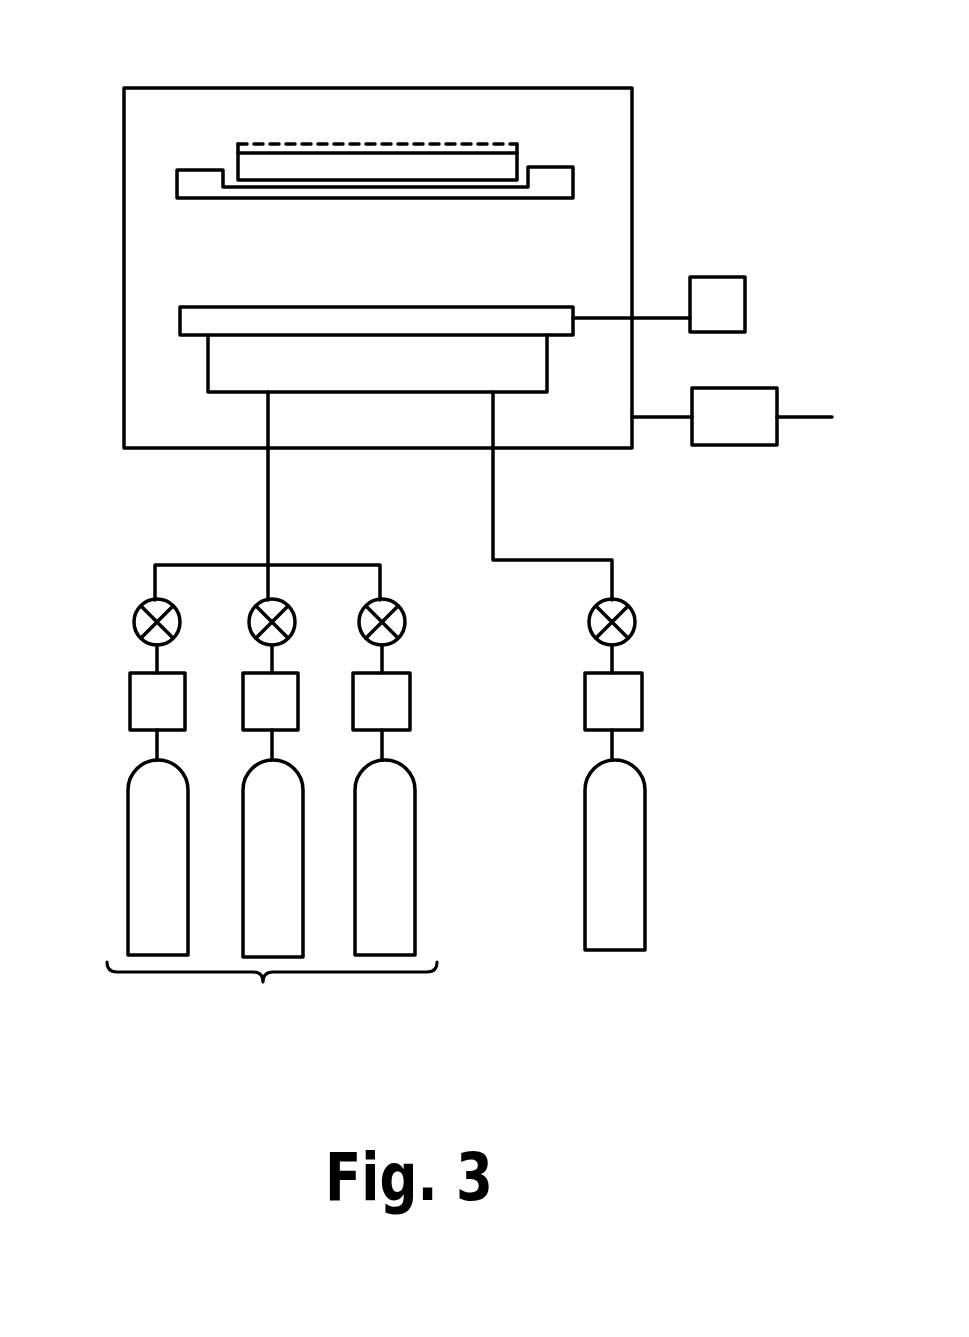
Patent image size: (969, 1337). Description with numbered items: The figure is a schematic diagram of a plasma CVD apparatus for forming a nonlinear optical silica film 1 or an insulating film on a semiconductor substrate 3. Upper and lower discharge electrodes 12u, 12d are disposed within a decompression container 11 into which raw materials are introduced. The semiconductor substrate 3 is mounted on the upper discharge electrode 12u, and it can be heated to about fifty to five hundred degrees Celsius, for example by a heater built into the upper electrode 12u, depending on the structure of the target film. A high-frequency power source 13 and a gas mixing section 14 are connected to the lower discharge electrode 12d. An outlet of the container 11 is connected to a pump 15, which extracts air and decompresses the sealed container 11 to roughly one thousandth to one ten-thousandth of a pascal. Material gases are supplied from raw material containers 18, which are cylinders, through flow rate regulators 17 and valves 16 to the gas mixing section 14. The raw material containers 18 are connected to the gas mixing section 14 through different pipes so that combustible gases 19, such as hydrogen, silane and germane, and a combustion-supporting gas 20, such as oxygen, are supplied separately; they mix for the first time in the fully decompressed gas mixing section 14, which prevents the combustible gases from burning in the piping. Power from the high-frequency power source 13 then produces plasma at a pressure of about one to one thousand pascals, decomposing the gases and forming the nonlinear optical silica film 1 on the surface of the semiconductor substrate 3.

The nonlinear optical silica film 1 is at (286, 144).
The semiconductor substrate 3 is at (517, 168).
The decompression container 11 is at (632, 108).
The upper discharge electrode 12u is at (177, 186).
The lower discharge electrode 12d is at (180, 320).
The high-frequency power source 13 is at (745, 290).
The gas mixing section 14 is at (547, 378).
The pump 15 is at (735, 447).
The valve 16 is at (178, 608).
The flow rate regulator 17 is at (185, 712).
The raw material container 18 is at (188, 935).
The combustible gases 19 is at (272, 999).
The combustion-supporting gas 20 is at (613, 950).